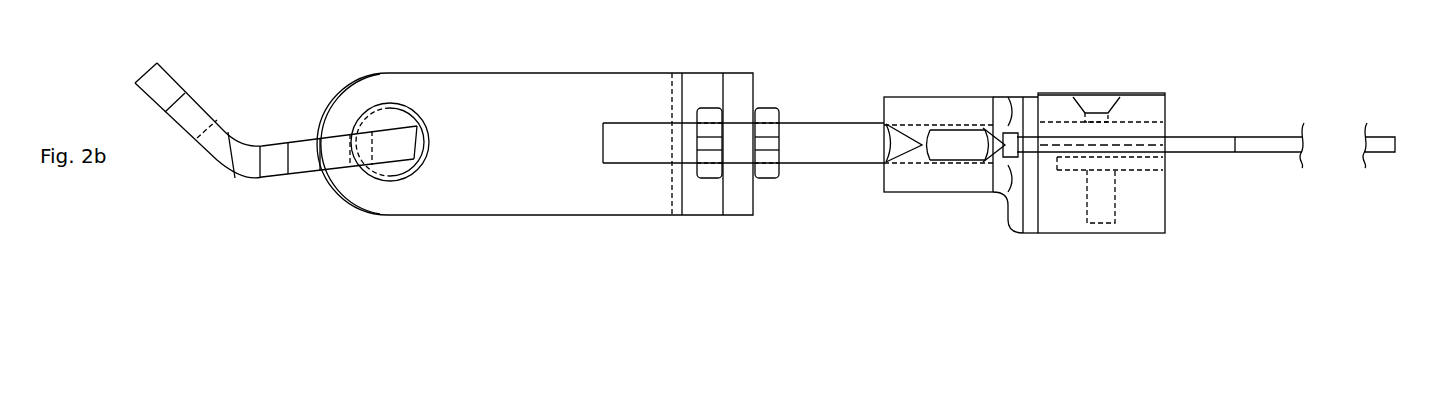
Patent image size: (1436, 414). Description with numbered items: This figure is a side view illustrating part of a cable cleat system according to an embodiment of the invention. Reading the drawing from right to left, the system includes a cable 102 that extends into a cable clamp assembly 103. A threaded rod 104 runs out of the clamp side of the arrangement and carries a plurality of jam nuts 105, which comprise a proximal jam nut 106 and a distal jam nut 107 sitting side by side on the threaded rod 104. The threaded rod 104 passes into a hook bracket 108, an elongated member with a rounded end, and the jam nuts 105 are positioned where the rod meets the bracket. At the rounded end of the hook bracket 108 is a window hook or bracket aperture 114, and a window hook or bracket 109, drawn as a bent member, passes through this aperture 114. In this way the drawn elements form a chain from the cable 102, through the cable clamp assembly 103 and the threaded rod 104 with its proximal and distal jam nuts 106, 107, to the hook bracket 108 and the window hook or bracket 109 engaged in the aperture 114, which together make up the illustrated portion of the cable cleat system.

The cable 102 is at (1253, 152).
The cable clamp assembly 103 is at (1113, 103).
The threaded rod 104 is at (813, 148).
The plurality of jam nuts 105 is at (736, 236).
The proximal jam nut 106 is at (706, 181).
The distal jam nut 107 is at (766, 181).
The hook bracket 108 is at (537, 193).
The window hook or bracket 109 is at (208, 128).
The window hook or bracket aperture 114 is at (382, 168).